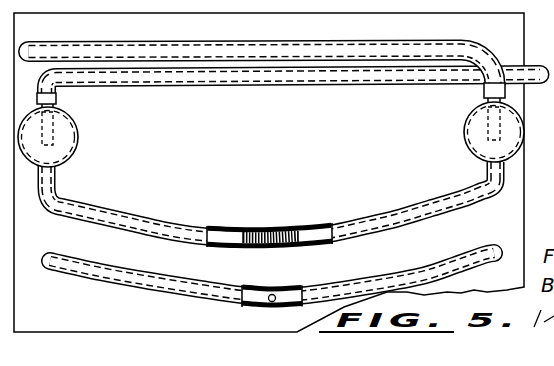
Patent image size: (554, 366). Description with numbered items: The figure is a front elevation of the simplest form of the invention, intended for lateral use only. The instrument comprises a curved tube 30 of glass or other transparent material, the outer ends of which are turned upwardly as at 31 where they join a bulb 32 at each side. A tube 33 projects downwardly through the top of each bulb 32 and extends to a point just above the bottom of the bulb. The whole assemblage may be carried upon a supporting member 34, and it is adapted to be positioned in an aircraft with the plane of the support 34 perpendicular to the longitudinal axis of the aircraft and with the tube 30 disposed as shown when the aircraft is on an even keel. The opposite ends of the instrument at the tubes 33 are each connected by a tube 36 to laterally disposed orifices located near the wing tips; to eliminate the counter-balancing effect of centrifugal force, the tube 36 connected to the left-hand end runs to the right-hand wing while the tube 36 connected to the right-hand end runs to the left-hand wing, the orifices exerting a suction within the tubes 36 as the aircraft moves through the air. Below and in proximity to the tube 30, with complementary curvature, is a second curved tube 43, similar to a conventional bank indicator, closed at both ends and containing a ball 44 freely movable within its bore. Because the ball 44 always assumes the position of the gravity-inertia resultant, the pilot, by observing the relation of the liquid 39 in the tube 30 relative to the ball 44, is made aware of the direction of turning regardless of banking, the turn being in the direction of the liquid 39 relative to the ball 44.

The curved tube 30 is at (132, 214).
The upwardly turned ends 31 is at (57, 172).
The bulb 32 is at (78, 137).
The tube 33 is at (57, 100).
The supporting member 34 is at (273, 141).
The tube 36 is at (248, 40).
The liquid 39 is at (279, 233).
The second curved tube 43 is at (467, 247).
The ball 44 is at (279, 288).